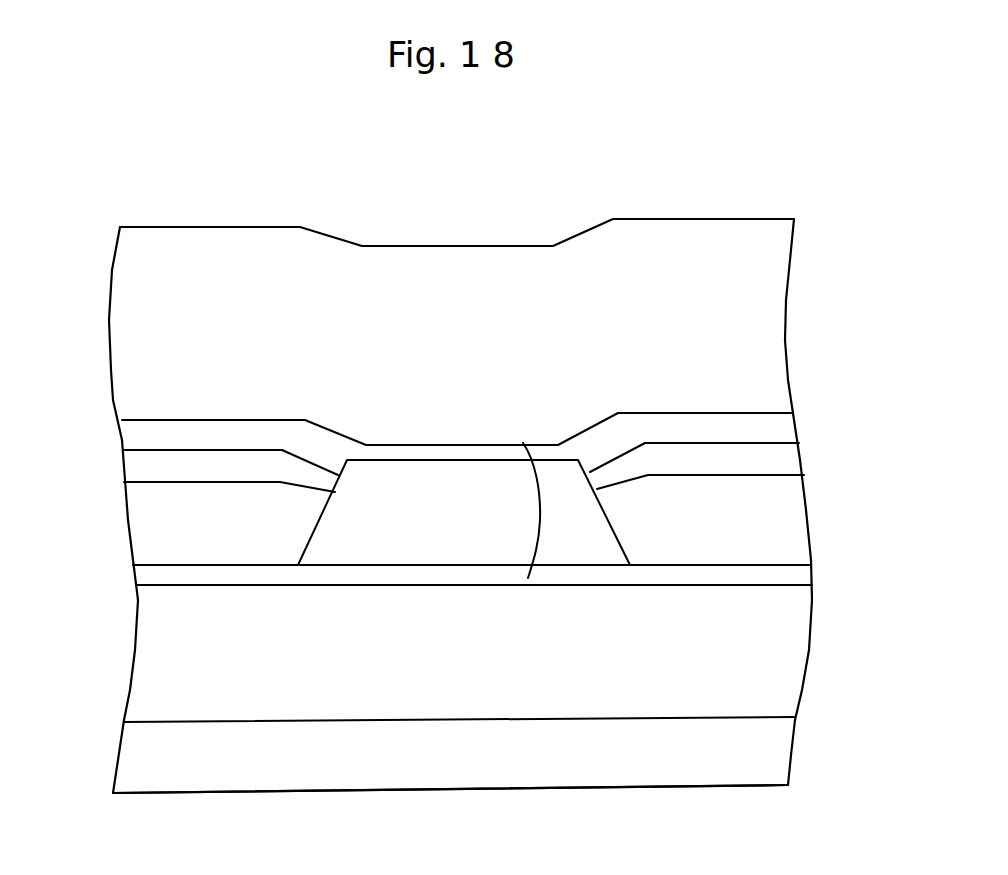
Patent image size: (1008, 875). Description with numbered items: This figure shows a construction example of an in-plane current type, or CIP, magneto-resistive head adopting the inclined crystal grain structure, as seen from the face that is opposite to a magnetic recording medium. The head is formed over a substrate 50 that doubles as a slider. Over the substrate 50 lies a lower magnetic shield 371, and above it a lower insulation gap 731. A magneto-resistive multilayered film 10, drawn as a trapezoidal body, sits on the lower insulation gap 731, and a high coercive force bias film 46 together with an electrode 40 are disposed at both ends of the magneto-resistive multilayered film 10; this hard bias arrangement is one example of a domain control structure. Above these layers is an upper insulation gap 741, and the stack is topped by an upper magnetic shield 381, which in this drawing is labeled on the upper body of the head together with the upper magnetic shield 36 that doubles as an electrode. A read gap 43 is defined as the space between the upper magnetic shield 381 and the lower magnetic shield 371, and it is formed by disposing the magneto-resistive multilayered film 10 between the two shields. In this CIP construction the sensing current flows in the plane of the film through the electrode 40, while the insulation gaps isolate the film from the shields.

The magneto-resistive multilayered film 10 is at (551, 512).
The upper magnetic shield 36 is at (489, 506).
The electrode 40 is at (219, 507).
The read gap 43 is at (590, 556).
The high coercive force bias film 46 is at (474, 599).
The substrate 50 is at (500, 761).
The lower magnetic shield 371 is at (505, 677).
The upper magnetic shield 381 is at (457, 230).
The lower insulation gap 731 is at (508, 561).
The upper insulation gap 741 is at (441, 443).